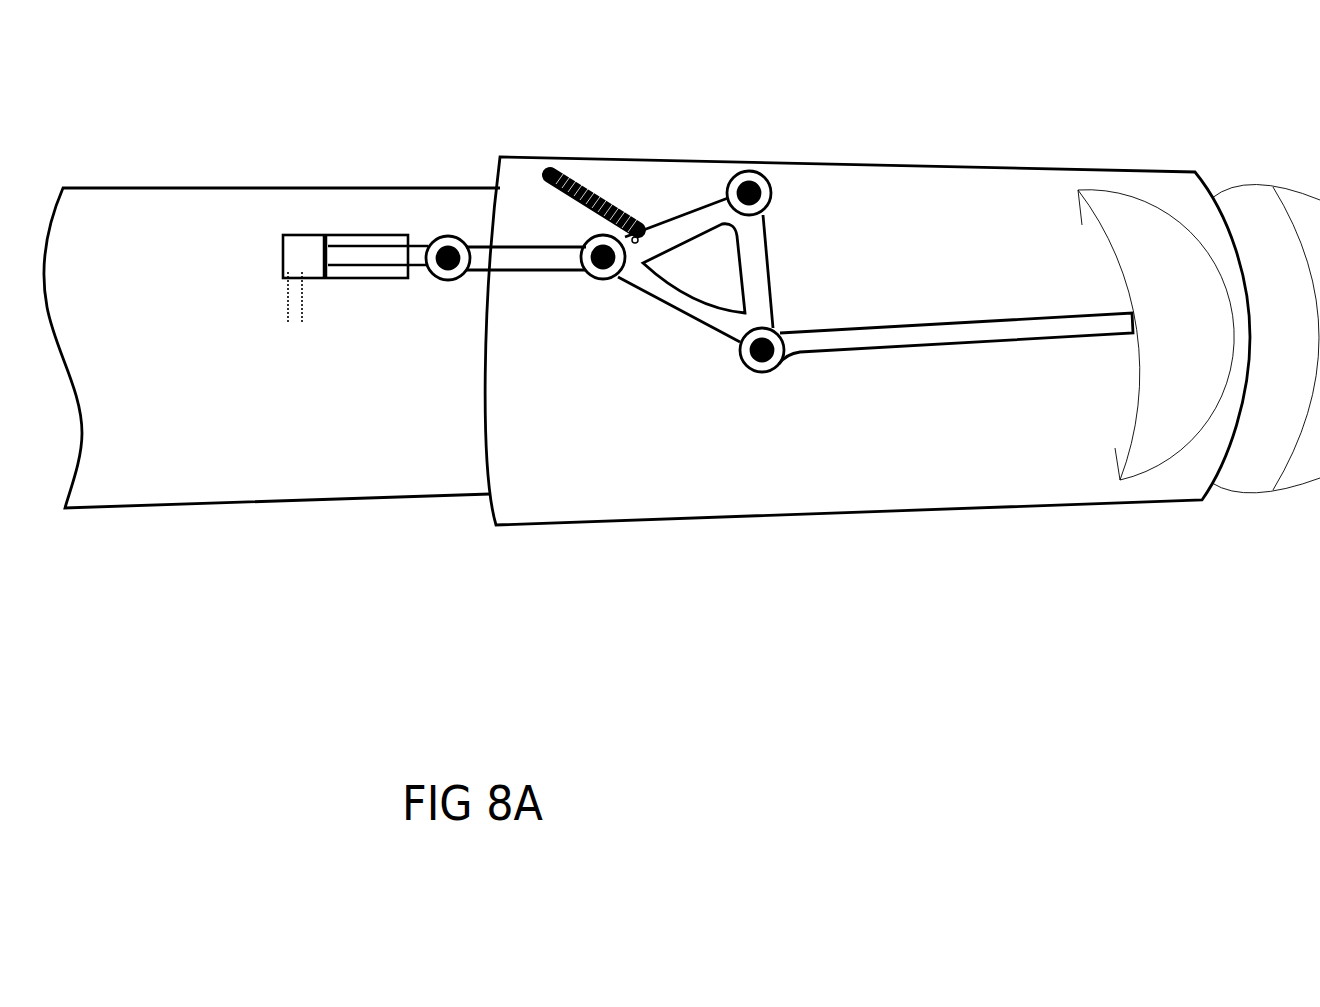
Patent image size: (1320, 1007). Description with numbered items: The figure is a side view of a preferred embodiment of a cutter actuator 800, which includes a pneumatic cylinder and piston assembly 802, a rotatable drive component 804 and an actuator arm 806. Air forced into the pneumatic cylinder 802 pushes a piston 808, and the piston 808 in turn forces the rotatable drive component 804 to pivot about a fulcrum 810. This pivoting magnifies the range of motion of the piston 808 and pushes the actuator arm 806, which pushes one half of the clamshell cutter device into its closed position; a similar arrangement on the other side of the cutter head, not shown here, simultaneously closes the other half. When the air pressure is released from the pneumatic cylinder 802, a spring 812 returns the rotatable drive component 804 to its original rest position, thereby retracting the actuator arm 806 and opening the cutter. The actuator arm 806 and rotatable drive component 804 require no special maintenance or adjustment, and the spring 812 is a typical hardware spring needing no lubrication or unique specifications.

The cutter actuator 800 is at (750, 475).
The pneumatic cylinder and piston assembly 802 is at (362, 315).
The rotatable drive component 804 is at (640, 344).
The actuator arm 806 is at (973, 344).
The piston 808 is at (360, 247).
The fulcrum 810 is at (811, 202).
The spring 812 is at (628, 171).